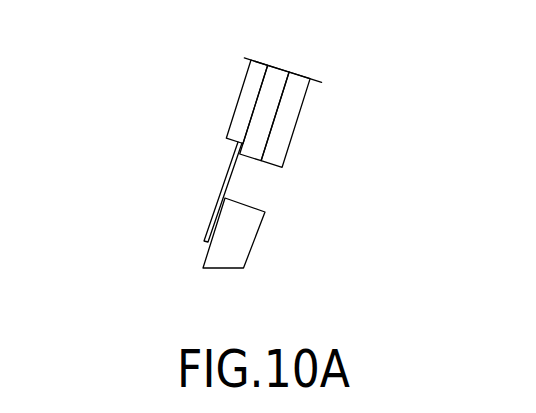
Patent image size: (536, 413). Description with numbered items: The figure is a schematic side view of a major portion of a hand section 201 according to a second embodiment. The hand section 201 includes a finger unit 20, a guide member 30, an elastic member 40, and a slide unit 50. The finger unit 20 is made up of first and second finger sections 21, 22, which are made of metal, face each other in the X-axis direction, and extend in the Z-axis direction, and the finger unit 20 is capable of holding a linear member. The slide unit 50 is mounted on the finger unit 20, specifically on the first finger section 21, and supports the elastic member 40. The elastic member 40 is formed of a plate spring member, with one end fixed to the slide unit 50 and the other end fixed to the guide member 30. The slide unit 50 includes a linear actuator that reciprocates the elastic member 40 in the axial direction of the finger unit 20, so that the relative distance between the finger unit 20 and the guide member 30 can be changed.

The hand section 201 is at (133, 90).
The finger unit 20 is at (362, 108).
The first finger section 21 is at (265, 100).
The second finger section 22 is at (278, 133).
The guide member 30 is at (255, 240).
The elastic member 40 is at (227, 185).
The slide unit 50 is at (241, 91).